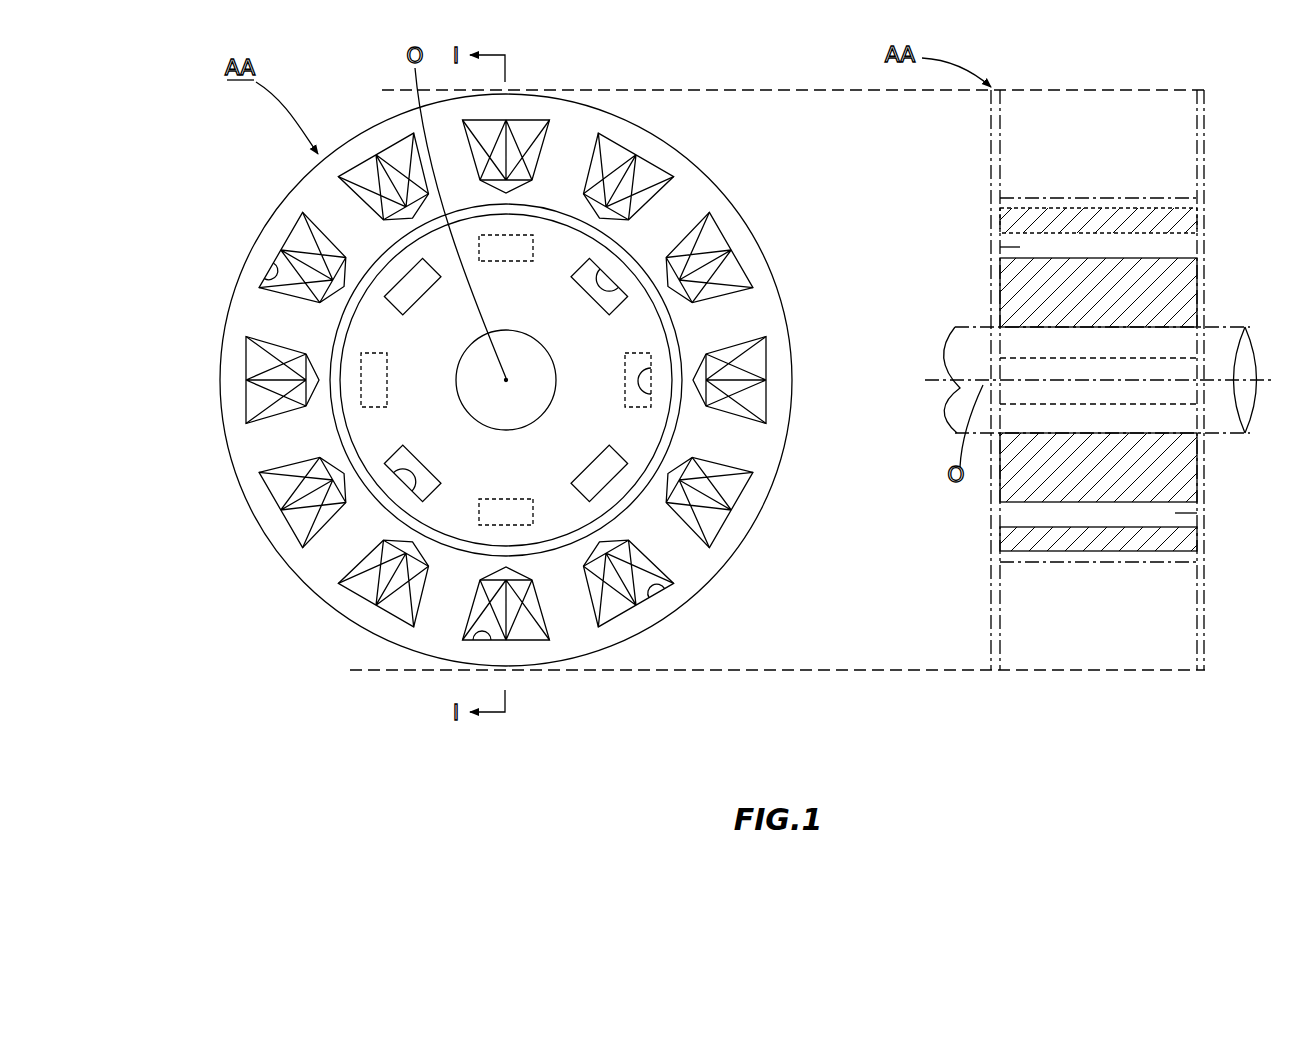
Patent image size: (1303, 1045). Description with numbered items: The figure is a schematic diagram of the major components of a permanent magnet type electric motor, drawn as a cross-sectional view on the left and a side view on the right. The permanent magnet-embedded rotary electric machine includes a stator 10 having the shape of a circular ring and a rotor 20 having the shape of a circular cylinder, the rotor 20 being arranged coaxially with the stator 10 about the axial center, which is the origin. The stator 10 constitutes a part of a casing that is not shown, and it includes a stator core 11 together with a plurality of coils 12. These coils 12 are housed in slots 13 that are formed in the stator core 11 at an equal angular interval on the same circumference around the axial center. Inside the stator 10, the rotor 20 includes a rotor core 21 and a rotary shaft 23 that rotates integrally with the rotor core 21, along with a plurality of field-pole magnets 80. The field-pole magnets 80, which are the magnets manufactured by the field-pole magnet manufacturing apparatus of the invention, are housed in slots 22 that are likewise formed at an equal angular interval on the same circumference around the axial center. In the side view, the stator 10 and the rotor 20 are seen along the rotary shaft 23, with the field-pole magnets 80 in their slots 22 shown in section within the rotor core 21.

The stator 10 is at (700, 604).
The stator core 11 is at (368, 148).
The coil 12 is at (300, 235).
The slot 13 is at (273, 258).
The rotor 20 is at (336, 335).
The rotor core 21 is at (557, 240).
The slot 22 is at (614, 279).
The rotary shaft 23 is at (502, 410).
The field-pole magnet 80 is at (610, 292).